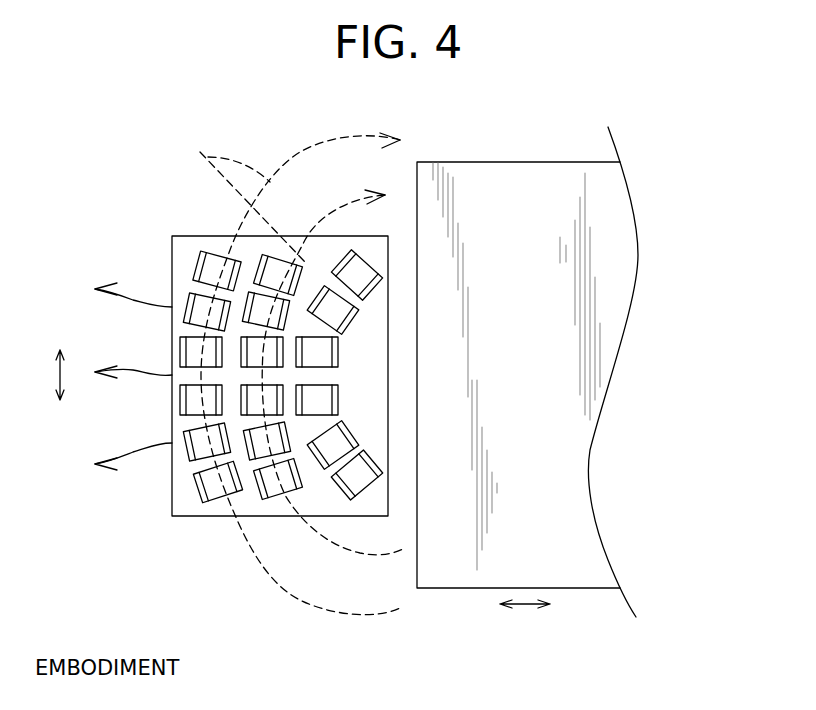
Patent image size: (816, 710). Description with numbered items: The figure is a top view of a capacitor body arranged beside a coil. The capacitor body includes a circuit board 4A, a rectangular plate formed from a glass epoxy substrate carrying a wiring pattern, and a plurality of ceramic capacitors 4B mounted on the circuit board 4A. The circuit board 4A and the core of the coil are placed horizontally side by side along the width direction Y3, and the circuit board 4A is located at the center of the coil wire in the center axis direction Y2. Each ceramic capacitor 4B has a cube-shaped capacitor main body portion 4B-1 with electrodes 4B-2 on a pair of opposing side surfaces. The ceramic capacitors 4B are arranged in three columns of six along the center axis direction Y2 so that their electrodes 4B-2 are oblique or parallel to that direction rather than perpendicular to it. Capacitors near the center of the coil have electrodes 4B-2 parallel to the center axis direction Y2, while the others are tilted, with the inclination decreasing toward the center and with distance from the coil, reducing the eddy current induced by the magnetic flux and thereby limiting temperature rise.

The circuit board 4A is at (186, 242).
The ceramic capacitor 4B is at (260, 484).
The capacitor main body portion 4B-1 is at (360, 503).
The electrode 4B-2 is at (345, 495).
The center axis direction Y2 is at (56, 375).
The width direction Y3 is at (525, 606).